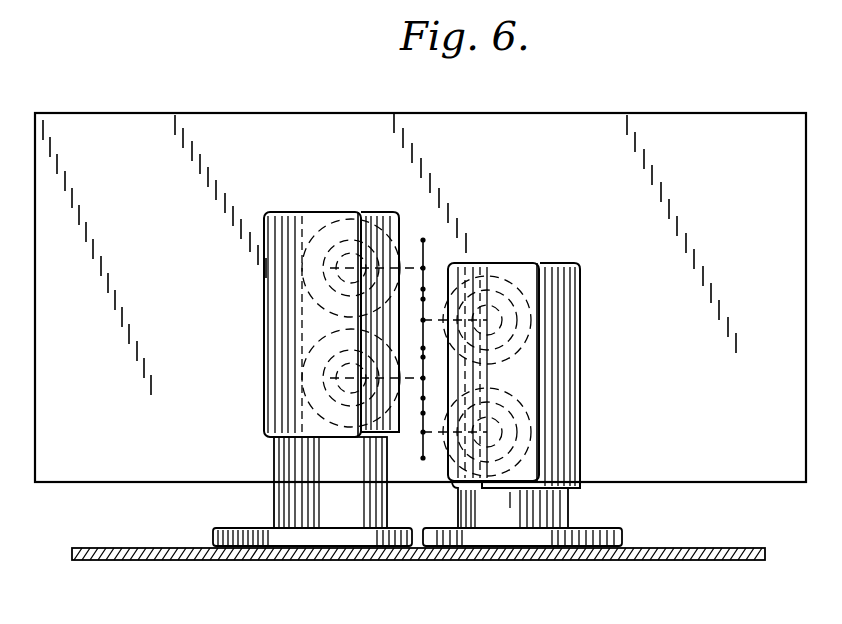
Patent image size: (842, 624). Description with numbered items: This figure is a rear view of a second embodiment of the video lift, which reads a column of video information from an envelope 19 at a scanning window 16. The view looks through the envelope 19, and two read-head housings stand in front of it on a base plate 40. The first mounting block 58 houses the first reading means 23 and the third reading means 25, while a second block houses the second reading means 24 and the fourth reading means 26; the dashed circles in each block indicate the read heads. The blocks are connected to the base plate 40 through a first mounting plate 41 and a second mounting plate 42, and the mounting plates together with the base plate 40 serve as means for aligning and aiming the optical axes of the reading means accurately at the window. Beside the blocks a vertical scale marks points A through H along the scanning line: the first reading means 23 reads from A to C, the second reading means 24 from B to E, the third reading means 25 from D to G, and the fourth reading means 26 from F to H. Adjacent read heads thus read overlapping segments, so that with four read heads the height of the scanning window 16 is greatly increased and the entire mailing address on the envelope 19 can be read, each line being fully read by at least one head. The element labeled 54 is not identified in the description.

The scanning window 16 is at (421, 428).
The envelope 19 is at (722, 470).
The first reading means 23 is at (544, 395).
The second reading means 24 is at (289, 370).
The third reading means 25 is at (544, 375).
The fourth reading means 26 is at (289, 324).
The base plate 40 is at (669, 561).
The first mounting plate 41 is at (598, 527).
The second mounting plate 42 is at (218, 530).
The first knob cover 54 is at (264, 322).
The first mounting block 58 is at (580, 376).